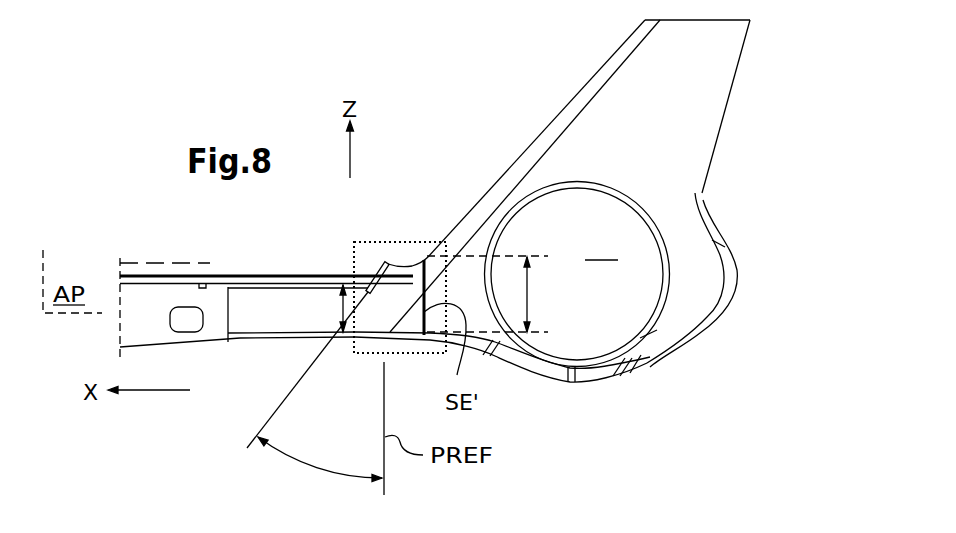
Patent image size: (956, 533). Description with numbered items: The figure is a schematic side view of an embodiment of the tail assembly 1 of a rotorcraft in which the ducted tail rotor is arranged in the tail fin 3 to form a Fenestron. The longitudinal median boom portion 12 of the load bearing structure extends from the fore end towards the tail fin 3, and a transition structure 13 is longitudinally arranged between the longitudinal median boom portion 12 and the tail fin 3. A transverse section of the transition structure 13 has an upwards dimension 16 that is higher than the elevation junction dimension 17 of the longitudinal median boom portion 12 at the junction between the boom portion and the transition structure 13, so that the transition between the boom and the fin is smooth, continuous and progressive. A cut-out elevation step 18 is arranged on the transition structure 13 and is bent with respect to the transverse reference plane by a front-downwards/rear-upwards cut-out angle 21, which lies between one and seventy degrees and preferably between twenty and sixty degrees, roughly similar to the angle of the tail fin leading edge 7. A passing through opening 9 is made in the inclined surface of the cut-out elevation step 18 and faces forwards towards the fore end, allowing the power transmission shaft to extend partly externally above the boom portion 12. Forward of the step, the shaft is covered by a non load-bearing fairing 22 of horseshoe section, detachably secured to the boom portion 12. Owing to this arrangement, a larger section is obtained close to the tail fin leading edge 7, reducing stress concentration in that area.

The tail assembly 1 is at (704, 381).
The tail fin 3 is at (757, 95).
The tail fin leading edge 7 is at (545, 128).
The passing through opening 9 is at (369, 259).
The longitudinal median boom portion 12 is at (210, 333).
The transition structure 13 is at (424, 260).
The upwards dimension 16 is at (498, 294).
The elevation junction dimension 17 is at (327, 308).
The cut-out elevation step 18 is at (385, 260).
The cut-out angle 21 is at (314, 397).
The non load-bearing fairing 22 is at (153, 262).